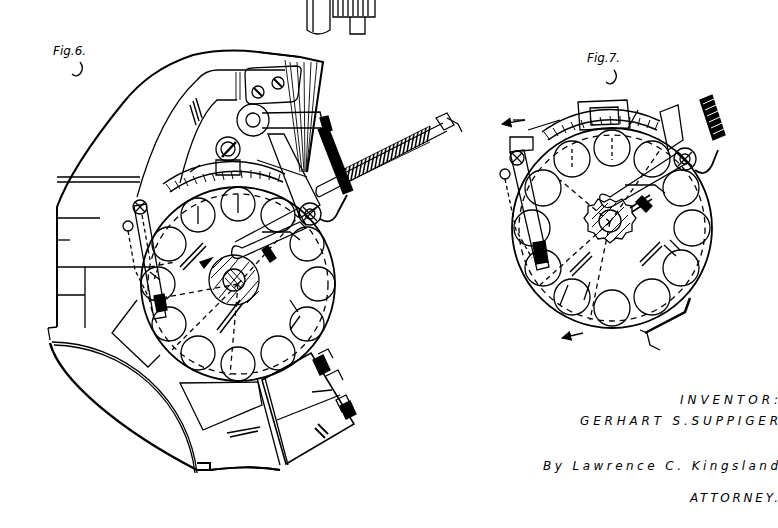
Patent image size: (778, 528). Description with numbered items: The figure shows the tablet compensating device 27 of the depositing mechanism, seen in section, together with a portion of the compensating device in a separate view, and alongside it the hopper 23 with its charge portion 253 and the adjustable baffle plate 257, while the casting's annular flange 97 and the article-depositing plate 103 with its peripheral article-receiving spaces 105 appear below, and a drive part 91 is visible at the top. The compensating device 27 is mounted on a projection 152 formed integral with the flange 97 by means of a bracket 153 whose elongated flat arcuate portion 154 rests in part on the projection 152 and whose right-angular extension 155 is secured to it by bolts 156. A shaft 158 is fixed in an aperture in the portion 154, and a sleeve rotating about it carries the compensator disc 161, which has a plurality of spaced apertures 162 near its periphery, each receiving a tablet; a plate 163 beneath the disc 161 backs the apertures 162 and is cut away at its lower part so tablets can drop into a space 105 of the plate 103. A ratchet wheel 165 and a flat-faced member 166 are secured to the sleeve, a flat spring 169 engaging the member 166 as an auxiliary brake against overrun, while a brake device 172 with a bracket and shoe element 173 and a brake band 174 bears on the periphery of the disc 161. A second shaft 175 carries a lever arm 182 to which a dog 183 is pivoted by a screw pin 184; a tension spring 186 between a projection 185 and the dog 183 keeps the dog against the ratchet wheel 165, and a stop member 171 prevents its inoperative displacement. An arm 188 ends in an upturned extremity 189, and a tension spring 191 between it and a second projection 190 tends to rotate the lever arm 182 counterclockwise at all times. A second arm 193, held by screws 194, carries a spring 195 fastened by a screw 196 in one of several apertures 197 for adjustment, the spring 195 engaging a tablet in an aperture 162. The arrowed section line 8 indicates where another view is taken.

In FIG. 7, the section line 8- 8 is at (522, 120).
In FIG. 6, the hopper 23 is at (96, 132).
In FIG. 6, the tablet compensating device 27 is at (358, 266).
In FIG. 7, the tablet compensating device 27 is at (718, 200).
In FIG. 6, the cylinder 91 is at (378, 10).
In FIG. 6, the annular flange 97 is at (290, 468).
In FIG. 6, the article-depositing plate 103 is at (100, 403).
In FIG. 6, the article-receiving spaces 105 is at (85, 296).
In FIG. 6, the projection 152 is at (322, 450).
In FIG. 6, the bracket 153 is at (330, 392).
In FIG. 7, the bracket 153 is at (645, 335).
In FIG. 6, the elongated flat arcuate portion 154 is at (280, 390).
In FIG. 7, the elongated flat arcuate portion 154 is at (628, 100).
In FIG. 6, the right-angular extension 155 is at (340, 375).
In FIG. 6, the bolts 156 is at (328, 362).
In FIG. 6, the shaft 158 is at (261, 291).
In FIG. 7, the shaft 158 is at (612, 246).
In FIG. 6, the compensator disc 161 is at (326, 306).
In FIG. 7, the compensator disc 161 is at (700, 252).
In FIG. 6, the spaced apertures 162 is at (150, 315).
In FIG. 7, the spaced apertures 162 is at (536, 280).
In FIG. 6, the plate 163 is at (145, 278).
In FIG. 7, the plate 163 is at (520, 230).
In FIG. 7, the ratchet wheel 165 is at (646, 216).
In FIG. 6, the member having a plurality of flat faces 166 is at (274, 257).
In FIG. 6, the flat spring 169 is at (200, 258).
In FIG. 6, the stop member 171 is at (290, 250).
In FIG. 7, the stop member 171 is at (660, 186).
In FIG. 6, the brake device 172 is at (190, 170).
In FIG. 7, the brake device 172 is at (634, 128).
In FIG. 6, the bracket and shoe element 173 is at (195, 185).
In FIG. 7, the bracket and shoe element 173 is at (570, 125).
In FIG. 6, the brake band 174 is at (200, 172).
In FIG. 7, the brake band 174 is at (676, 140).
In FIG. 6, the second shaft 175 is at (262, 122).
In FIG. 6, the lever arm 182 is at (322, 210).
In FIG. 7, the lever arm 182 is at (686, 147).
In FIG. 6, the dog or pawl 183 is at (284, 240).
In FIG. 7, the dog or pawl 183 is at (700, 162).
In FIG. 6, the screw pin 184 is at (332, 220).
In FIG. 7, the screw pin 184 is at (700, 170).
In FIG. 6, the projection 185 is at (292, 120).
In FIG. 6, the tension spring 186 is at (333, 128).
In FIG. 7, the tension spring 186 is at (718, 98).
In FIG. 6, the arm 188 is at (402, 158).
In FIG. 6, the upturned extremity 189 is at (446, 132).
In FIG. 7, the upturned extremity 189 is at (450, 128).
In FIG. 6, the second projection 190 is at (340, 150).
In FIG. 6, the tension spring 191 is at (398, 132).
In FIG. 6, the second arm 193 is at (205, 80).
In FIG. 7, the second arm 193 is at (535, 140).
In FIG. 6, the screws 194 is at (276, 78).
In FIG. 6, the spring 195 is at (150, 256).
In FIG. 7, the spring 195 is at (518, 200).
In FIG. 6, the screw 196 is at (134, 205).
In FIG. 7, the screw 196 is at (510, 156).
In FIG. 6, the apertures 197 is at (123, 226).
In FIG. 7, the apertures 197 is at (500, 175).
In FIG. 6, the charge portion 253 is at (223, 55).
In FIG. 6, the plate 257 is at (68, 248).